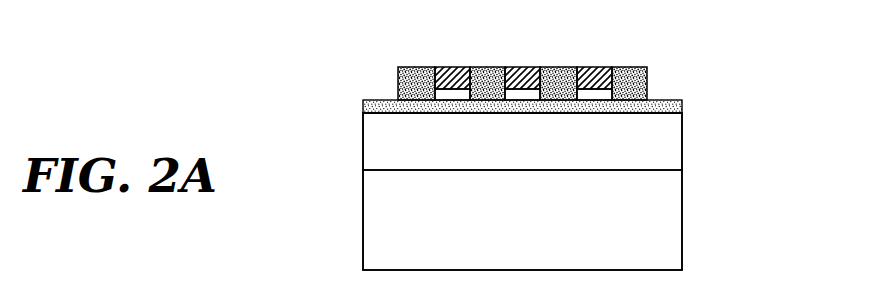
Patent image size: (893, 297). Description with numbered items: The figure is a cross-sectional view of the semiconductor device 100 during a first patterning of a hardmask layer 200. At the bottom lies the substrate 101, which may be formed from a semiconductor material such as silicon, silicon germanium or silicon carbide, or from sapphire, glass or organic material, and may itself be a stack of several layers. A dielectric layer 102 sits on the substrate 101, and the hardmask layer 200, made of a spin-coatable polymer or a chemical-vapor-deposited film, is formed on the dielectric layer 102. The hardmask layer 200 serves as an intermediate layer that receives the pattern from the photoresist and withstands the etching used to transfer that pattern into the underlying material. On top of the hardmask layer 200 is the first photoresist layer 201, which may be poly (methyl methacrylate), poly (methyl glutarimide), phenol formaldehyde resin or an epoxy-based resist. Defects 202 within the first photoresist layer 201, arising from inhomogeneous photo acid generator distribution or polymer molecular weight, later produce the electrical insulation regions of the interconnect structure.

The semiconductor device 100 is at (688, 113).
The substrate 101 is at (546, 240).
The dielectric layer 102 is at (546, 154).
The hardmask layer 200 is at (680, 107).
The first photoresist layer 201 is at (634, 66).
The defects 202 is at (447, 66).